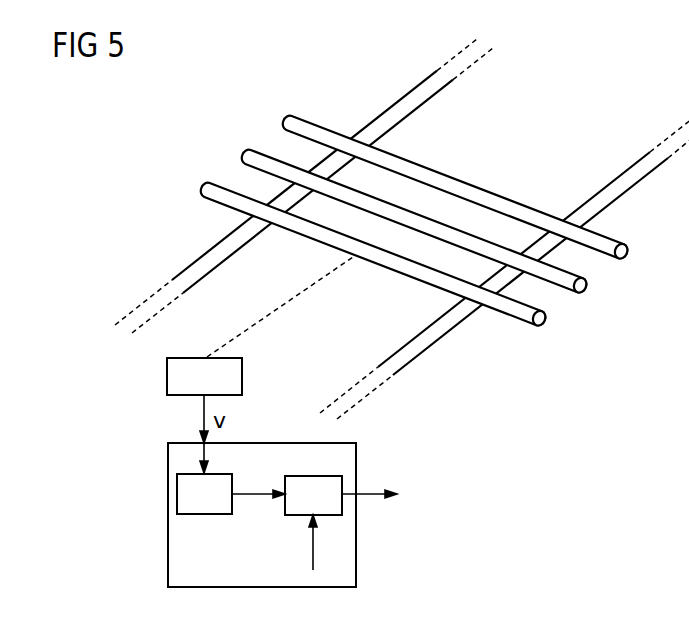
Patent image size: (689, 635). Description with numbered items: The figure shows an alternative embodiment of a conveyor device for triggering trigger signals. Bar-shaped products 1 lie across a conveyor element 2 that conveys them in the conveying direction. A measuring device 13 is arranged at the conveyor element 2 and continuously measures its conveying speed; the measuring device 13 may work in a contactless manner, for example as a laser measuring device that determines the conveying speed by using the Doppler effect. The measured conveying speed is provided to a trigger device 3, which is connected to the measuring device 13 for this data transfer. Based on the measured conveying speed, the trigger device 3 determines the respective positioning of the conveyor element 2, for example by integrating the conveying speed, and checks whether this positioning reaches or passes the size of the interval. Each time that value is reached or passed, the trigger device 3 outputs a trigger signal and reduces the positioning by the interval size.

The bar-shaped products 1 is at (461, 238).
The conveyor element 2 is at (403, 97).
The measuring device 13 is at (242, 378).
The trigger device 3 is at (168, 487).